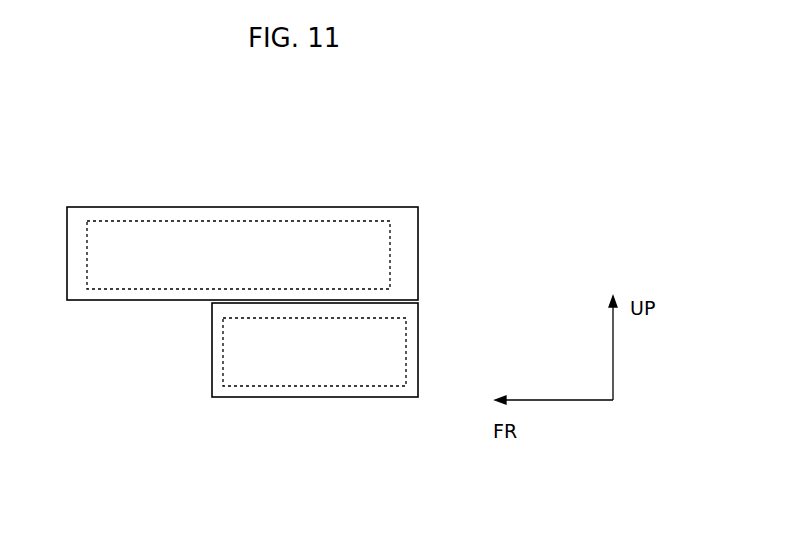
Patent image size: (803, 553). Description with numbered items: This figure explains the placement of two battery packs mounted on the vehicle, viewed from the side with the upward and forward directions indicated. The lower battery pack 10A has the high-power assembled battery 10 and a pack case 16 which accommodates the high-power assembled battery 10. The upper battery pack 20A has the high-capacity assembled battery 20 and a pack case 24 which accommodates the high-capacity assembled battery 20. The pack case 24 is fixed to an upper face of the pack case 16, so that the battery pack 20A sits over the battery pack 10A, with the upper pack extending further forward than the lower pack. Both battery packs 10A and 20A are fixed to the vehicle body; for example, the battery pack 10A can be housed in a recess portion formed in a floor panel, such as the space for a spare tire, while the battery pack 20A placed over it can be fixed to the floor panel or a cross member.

The pack case 24 is at (110, 207).
The high-capacity assembled battery 20 is at (187, 221).
The battery pack 20A is at (425, 243).
The pack case 16 is at (252, 397).
The high-power assembled battery 10 is at (311, 386).
The battery pack 10A is at (425, 343).